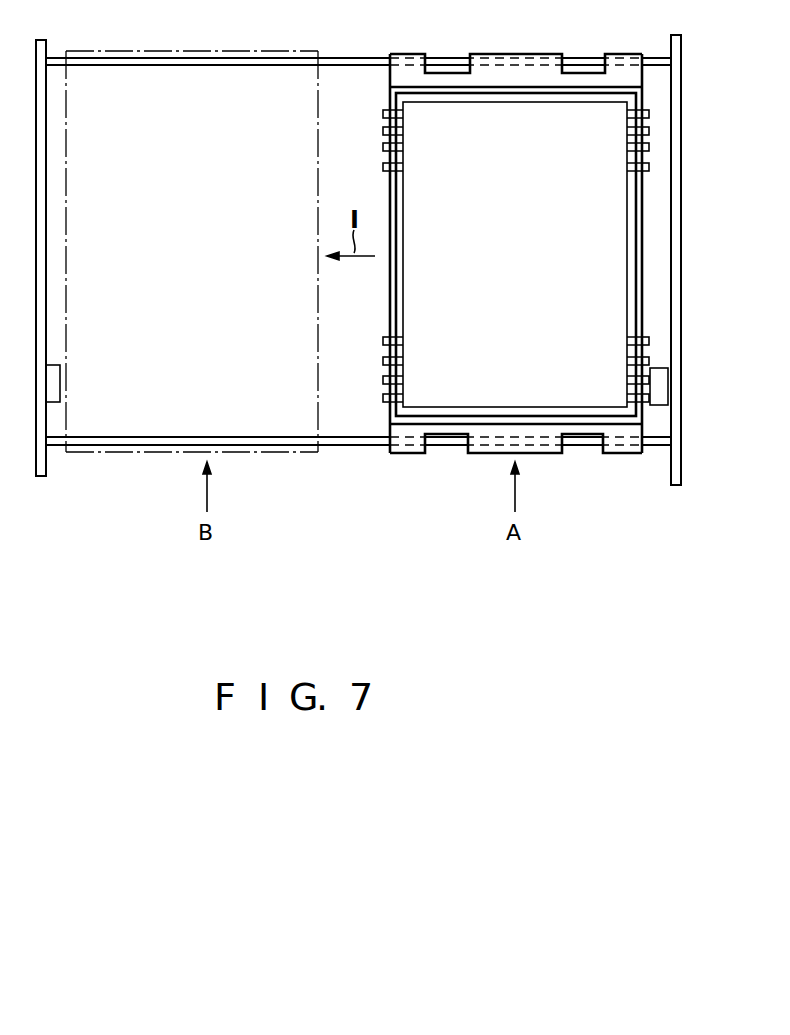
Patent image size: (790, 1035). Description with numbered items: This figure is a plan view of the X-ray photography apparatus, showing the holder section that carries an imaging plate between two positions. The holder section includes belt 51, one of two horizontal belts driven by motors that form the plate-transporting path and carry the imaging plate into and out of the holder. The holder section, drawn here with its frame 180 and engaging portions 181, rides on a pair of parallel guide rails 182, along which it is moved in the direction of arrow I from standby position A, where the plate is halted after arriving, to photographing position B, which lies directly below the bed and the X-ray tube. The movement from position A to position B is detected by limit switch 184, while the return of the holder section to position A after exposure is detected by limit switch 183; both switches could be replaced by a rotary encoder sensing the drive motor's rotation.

The belt 51 is at (447, 400).
The cassette holder frame 180 is at (390, 280).
The engaging portions 181 is at (512, 78).
The guide rails 182 is at (351, 54).
The limit switch 183 is at (665, 400).
The limit switch 184 is at (58, 400).